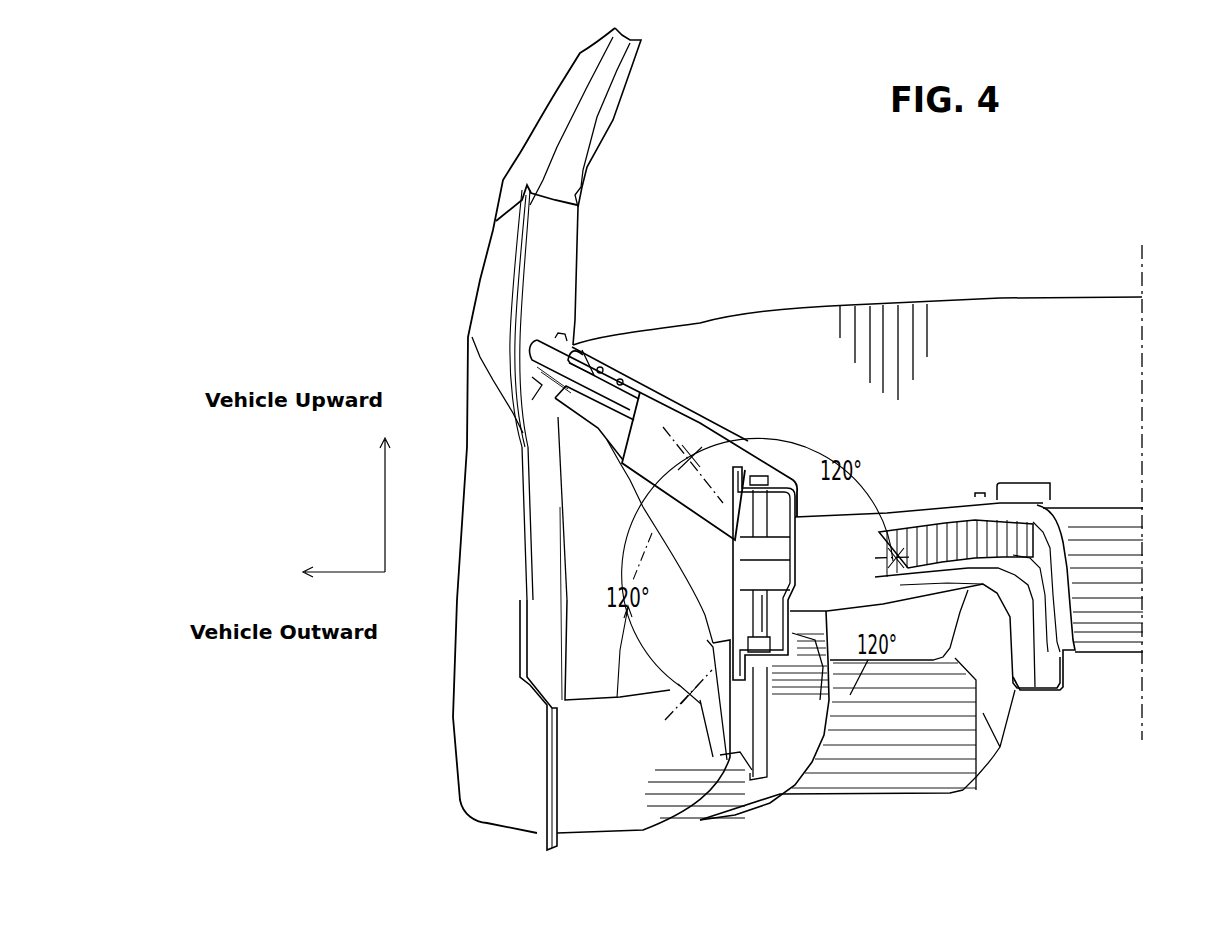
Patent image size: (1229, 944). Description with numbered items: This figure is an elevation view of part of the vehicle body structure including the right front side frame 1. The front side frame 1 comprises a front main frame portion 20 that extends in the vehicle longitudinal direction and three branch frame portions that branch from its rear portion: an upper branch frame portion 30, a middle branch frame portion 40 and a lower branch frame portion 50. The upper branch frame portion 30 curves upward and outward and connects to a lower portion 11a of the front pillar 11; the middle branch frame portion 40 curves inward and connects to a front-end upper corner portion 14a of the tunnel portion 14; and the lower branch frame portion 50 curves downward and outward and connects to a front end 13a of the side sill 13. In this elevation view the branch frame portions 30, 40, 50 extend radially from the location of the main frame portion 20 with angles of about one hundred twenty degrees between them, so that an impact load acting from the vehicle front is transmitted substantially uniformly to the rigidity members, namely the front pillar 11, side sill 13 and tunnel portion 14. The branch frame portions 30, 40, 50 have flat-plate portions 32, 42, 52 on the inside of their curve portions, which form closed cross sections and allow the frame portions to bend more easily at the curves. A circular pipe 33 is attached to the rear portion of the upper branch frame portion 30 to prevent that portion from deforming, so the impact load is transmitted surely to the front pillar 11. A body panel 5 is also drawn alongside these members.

The front side frame 1 is at (773, 420).
The side sill / body panel 5 is at (963, 338).
The front pillar 11 is at (509, 135).
The lower portion of the front pillar 11a is at (553, 323).
The side sill 13 is at (449, 802).
The front end of the side sill 13a is at (523, 800).
The tunnel portion 14 is at (1128, 559).
The front-end upper corner portion of the tunnel portion 14a is at (1057, 500).
The front main frame portion 20 is at (815, 633).
The upper branch frame portion 30 is at (701, 401).
The flat-plate portion 32 is at (652, 456).
The circular pipe 33 is at (537, 357).
The middle branch frame portion 40 is at (944, 489).
The flat-plate portion 42 is at (956, 590).
The lower branch frame portion 50 is at (807, 757).
The flat-plate portion 52 is at (737, 737).